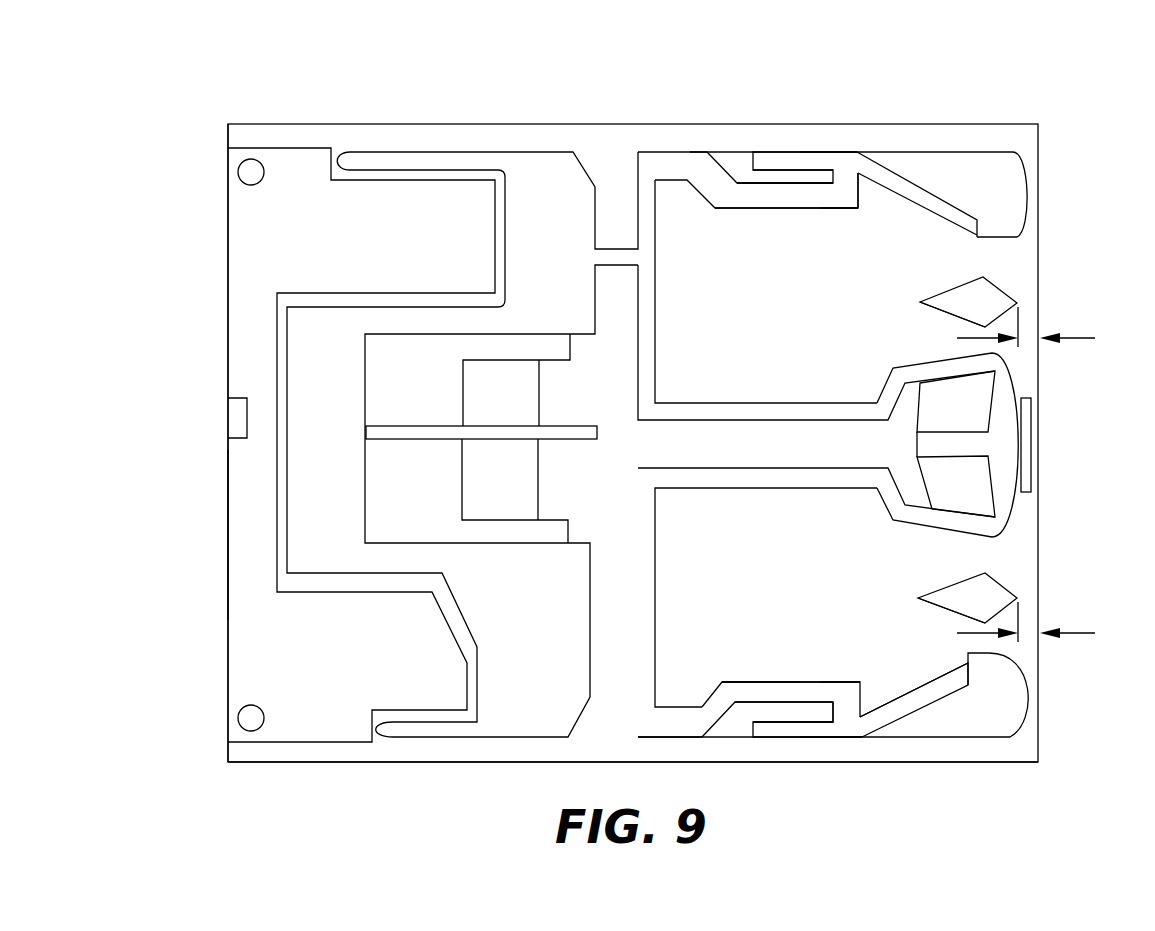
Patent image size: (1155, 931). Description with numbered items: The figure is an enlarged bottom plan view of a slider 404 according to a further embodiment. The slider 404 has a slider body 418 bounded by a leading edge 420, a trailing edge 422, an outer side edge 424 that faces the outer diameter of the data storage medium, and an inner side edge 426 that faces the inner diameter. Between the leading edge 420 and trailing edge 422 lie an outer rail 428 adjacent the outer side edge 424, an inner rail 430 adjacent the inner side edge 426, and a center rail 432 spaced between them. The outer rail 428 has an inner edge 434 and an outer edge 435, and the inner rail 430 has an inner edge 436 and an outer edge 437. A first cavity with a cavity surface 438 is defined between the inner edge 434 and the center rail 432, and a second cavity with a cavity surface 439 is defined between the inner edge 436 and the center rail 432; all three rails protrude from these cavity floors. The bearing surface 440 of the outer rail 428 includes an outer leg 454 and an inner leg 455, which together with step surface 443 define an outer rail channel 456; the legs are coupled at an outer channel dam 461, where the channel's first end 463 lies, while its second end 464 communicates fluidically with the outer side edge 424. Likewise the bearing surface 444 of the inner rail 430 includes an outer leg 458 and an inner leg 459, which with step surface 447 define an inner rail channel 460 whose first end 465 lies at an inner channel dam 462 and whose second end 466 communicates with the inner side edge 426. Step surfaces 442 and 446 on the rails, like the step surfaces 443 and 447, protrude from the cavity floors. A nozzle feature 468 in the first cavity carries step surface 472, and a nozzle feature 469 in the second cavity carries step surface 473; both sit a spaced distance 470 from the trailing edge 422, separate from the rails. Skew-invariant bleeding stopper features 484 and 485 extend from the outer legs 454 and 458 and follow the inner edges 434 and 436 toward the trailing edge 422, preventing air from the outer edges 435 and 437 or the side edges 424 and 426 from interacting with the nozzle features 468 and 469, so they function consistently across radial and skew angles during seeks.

The slider 404 is at (1046, 87).
The slider body 418 is at (216, 532).
The leading edge 420 is at (228, 357).
The trailing edge 422 is at (1037, 463).
The outer side edge 424 is at (598, 124).
The inner side edge 426 is at (522, 762).
The outer rail 428 is at (851, 225).
The inner rail 430 is at (849, 670).
The center rail 432 is at (875, 501).
The inner edge of outer rail 434 is at (835, 208).
The outer edge of outer rail 435 is at (835, 152).
The inner edge of inner rail 436 is at (765, 682).
The outer edge of inner rail 437 is at (847, 738).
The cavity surface 438 is at (767, 354).
The cavity surface 439 is at (765, 555).
The bearing surface of outer rail 440 is at (853, 205).
The step surface 442 is at (1002, 192).
The step surface 443 is at (745, 170).
The bearing surface of inner rail 444 is at (857, 700).
The step surface 446 is at (1002, 711).
The step surface 447 is at (748, 734).
The outer leg 454 is at (805, 153).
The inner leg 455 is at (773, 202).
The outer rail channel 456 is at (760, 177).
The outer leg 458 is at (820, 728).
The inner leg 459 is at (748, 692).
The inner rail channel 460 is at (765, 713).
The outer channel dam 461 is at (863, 182).
The inner channel dam 462 is at (893, 703).
The first end of outer rail channel 463 is at (818, 173).
The second end of outer rail channel 464 is at (722, 136).
The first end of inner rail channel 465 is at (824, 706).
The second end of inner rail channel 466 is at (732, 752).
The nozzle feature 468 is at (950, 319).
The nozzle feature 469 is at (947, 615).
The spaced distance 470 is at (1077, 338).
The step surface 472 is at (995, 313).
The step surface 473 is at (995, 606).
The skew-invariant bleeding stopper feature 484 is at (907, 192).
The skew-invariant bleeding stopper feature 485 is at (930, 693).